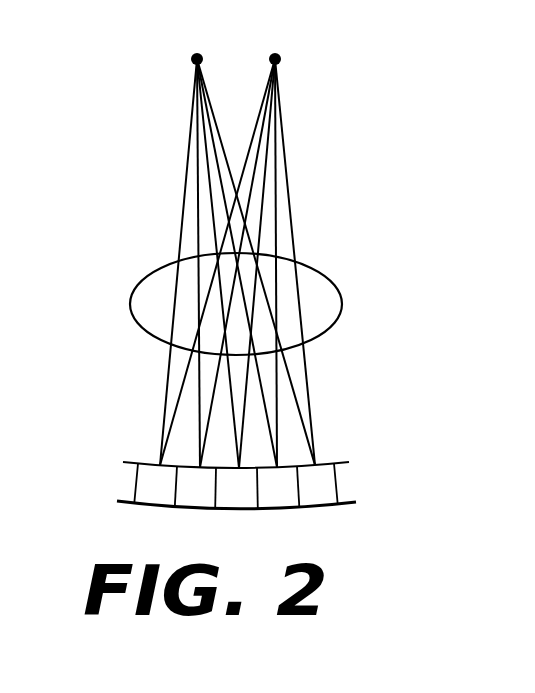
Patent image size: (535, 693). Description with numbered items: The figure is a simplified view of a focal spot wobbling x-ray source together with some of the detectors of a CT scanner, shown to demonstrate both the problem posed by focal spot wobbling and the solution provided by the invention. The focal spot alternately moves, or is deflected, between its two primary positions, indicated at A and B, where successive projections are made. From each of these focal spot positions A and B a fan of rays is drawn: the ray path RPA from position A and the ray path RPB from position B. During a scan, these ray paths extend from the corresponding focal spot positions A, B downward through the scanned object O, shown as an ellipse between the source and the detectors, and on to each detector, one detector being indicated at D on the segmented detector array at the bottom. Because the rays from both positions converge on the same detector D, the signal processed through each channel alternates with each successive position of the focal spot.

The focal spot position A is at (195, 45).
The focal spot position B is at (276, 45).
The ray path RPA is at (189, 123).
The ray path RPB is at (287, 131).
The scanned object O is at (339, 287).
The detector D is at (277, 506).